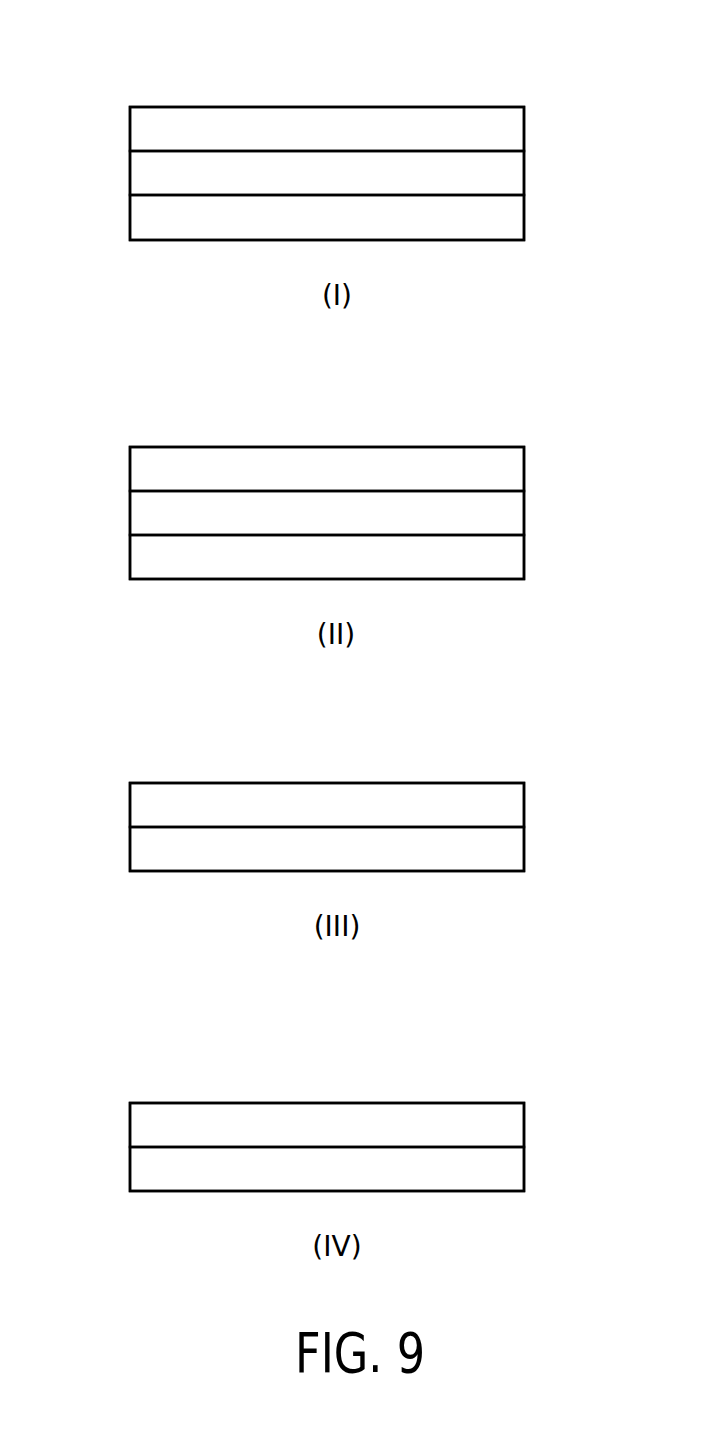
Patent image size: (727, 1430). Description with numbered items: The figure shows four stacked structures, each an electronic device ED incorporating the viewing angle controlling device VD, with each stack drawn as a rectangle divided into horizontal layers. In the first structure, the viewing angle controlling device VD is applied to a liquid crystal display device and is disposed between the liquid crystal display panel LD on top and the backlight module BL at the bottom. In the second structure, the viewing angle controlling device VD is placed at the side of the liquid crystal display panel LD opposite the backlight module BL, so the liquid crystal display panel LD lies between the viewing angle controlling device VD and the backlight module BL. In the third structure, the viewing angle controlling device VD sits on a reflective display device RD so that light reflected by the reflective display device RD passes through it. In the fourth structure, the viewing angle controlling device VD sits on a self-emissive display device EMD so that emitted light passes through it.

The electronic device ED is at (104, 65).
The liquid crystal display panel LD is at (495, 124).
The viewing angle controlling device VD is at (363, 649).
The backlight module BL is at (361, 387).
The reflective display device RD is at (363, 849).
The self-emissive display device EMD is at (373, 1169).